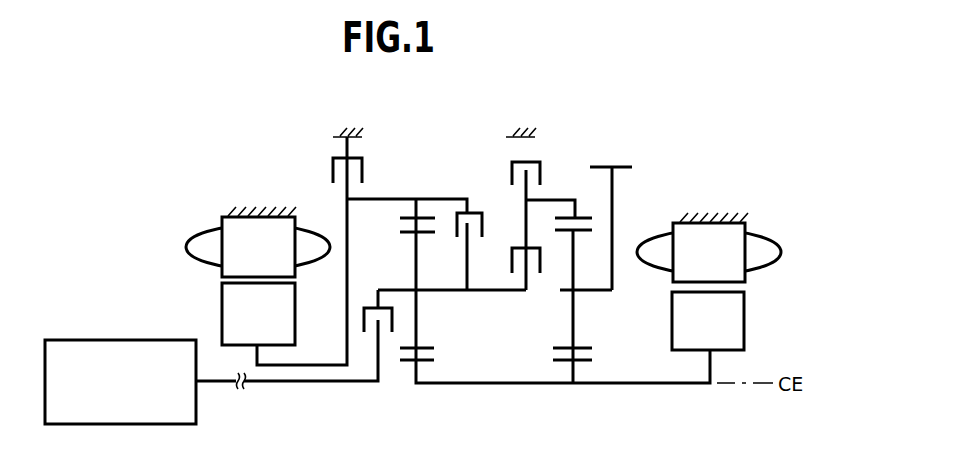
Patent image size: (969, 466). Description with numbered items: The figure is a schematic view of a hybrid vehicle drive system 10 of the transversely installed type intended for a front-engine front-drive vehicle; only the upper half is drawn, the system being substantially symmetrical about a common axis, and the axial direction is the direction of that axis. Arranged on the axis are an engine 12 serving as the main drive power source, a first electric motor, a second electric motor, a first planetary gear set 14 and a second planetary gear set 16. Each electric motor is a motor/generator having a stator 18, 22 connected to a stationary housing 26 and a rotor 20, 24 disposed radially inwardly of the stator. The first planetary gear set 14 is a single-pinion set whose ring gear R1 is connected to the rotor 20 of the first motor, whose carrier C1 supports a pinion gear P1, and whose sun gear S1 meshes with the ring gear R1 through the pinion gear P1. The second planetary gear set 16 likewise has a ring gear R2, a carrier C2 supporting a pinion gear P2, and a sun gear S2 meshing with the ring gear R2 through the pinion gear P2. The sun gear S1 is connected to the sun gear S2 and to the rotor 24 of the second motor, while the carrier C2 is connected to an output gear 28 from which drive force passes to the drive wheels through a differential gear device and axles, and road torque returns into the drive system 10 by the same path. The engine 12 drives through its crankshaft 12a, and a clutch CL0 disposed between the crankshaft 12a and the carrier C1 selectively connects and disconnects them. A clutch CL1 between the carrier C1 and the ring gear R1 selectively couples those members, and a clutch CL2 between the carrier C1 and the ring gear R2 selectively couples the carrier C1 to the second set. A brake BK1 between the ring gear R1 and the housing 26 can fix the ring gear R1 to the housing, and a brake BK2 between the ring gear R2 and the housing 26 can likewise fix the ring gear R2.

The hybrid vehicle drive system 10 is at (702, 114).
The engine 12 is at (80, 343).
The crankshaft 12a is at (228, 383).
The first planetary gear set 14 is at (415, 386).
The second planetary gear set 16 is at (573, 386).
The stator 18 is at (222, 276).
The rotor 20 is at (222, 317).
The stator 22 is at (745, 280).
The rotor 24 is at (744, 322).
The housing 26 is at (262, 210).
The output gear 28 is at (620, 167).
The brake BK1 is at (333, 170).
The brake BK2 is at (512, 172).
The clutch CL0 is at (362, 314).
The clutch CL1 is at (486, 227).
The clutch CL2 is at (510, 258).
The ring gear R1 is at (408, 217).
The ring gear R2 is at (582, 217).
The carrier C1 is at (432, 289).
The carrier C2 is at (587, 291).
The pinion gear P1 is at (420, 346).
The pinion gear P2 is at (563, 346).
The sun gear S1 is at (426, 360).
The sun gear S2 is at (583, 361).